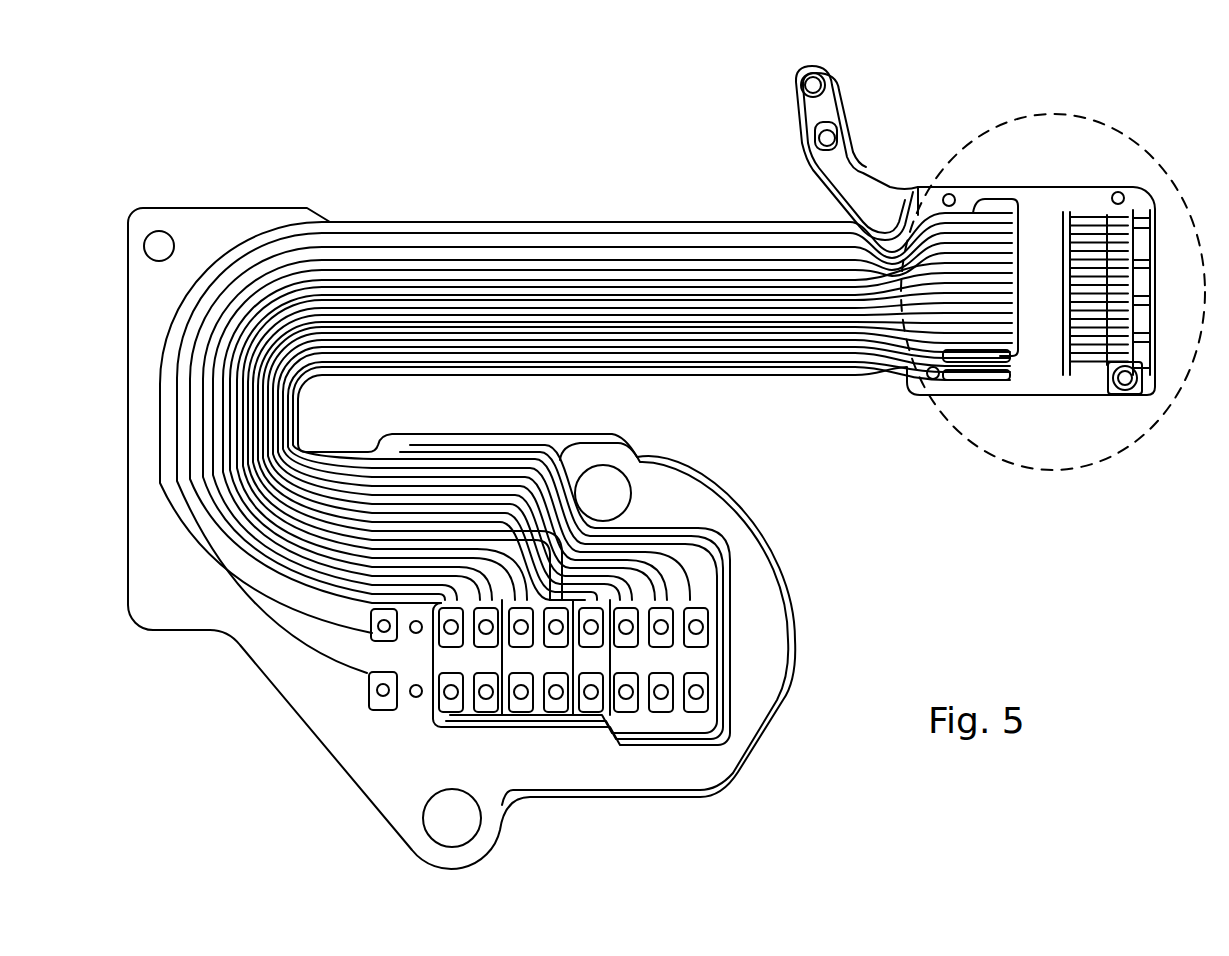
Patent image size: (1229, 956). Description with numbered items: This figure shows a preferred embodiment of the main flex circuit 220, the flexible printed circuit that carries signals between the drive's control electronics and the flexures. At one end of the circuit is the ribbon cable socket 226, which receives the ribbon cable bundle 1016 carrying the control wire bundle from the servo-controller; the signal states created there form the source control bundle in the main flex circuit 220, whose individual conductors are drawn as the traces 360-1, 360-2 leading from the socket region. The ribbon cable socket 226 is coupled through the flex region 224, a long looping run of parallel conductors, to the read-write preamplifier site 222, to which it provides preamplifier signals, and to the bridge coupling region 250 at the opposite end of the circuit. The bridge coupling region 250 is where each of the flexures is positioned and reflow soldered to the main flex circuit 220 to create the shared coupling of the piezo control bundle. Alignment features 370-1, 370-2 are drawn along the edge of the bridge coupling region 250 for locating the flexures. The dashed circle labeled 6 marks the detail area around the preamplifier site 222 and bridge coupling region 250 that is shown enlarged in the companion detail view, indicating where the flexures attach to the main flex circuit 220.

The main flex circuit 220 is at (1195, 91).
The flex region 224 is at (586, 449).
The read-write preamplifier site 222 is at (1090, 177).
The bridge coupling region 250 is at (1150, 200).
The first alignment tab 370-1 is at (1152, 238).
The second alignment tab 370-2 is at (1157, 343).
The detail region shown in FIG. 6 is at (1013, 470).
The ribbon cable bundle 1016 is at (530, 673).
The ribbon cable socket 226 is at (737, 607).
The second conductive trace 360-2 is at (463, 730).
The first conductive trace 360-1 is at (545, 730).